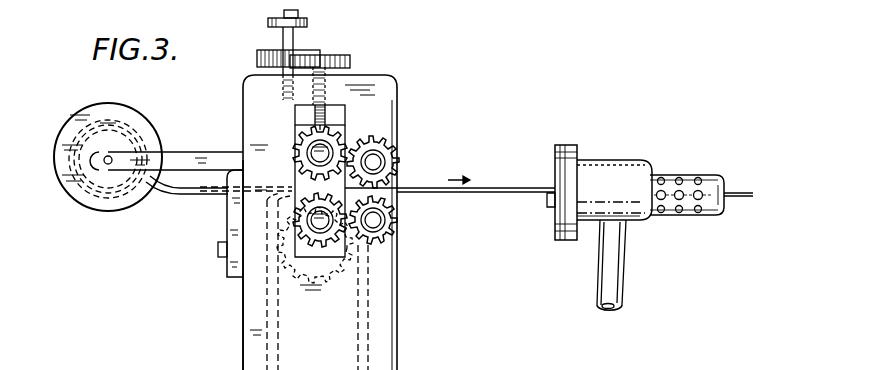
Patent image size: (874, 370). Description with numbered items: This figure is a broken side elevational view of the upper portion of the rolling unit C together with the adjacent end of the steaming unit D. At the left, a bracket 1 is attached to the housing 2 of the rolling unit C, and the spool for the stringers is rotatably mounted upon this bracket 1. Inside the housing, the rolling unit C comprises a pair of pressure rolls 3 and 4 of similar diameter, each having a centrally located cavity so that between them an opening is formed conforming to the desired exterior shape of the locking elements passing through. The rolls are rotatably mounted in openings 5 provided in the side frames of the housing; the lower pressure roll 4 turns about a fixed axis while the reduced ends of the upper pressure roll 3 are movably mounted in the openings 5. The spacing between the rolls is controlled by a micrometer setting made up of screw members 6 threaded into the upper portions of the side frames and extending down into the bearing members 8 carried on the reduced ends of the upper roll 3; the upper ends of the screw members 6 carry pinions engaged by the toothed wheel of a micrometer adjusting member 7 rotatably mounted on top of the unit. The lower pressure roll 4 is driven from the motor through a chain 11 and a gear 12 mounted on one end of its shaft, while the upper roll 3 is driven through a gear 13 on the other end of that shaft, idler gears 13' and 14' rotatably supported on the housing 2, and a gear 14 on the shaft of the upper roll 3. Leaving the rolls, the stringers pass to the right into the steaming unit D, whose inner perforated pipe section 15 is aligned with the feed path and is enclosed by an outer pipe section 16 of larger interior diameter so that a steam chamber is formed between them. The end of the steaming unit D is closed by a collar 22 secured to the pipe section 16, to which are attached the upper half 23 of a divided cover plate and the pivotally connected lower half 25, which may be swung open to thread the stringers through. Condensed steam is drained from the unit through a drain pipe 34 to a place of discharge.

The bracket 1 is at (205, 158).
The housing 2 is at (243, 303).
The upper pressure roll 3 is at (297, 128).
The lower pressure roll 4 is at (322, 27).
The openings 5 is at (300, 115).
The screw members 6 is at (322, 70).
The micrometer adjusting member 7 is at (266, 19).
The bearing members 8 is at (332, 130).
The chain 11 is at (363, 347).
The gear 12 is at (334, 280).
The gear 13 is at (273, 223).
The idler gear 13' is at (399, 220).
The gear 14 is at (360, 142).
The idler gear 14' is at (395, 162).
The inner perforated pipe section 15 is at (710, 177).
The pipe section 16 is at (627, 162).
The collar 22 is at (572, 148).
The upper half of cover plate 23 is at (555, 168).
The lower half of cover plate 25 is at (555, 226).
The drain pipe 34 is at (622, 270).
The rolling unit C is at (416, 74).
The steaming unit D is at (621, 108).